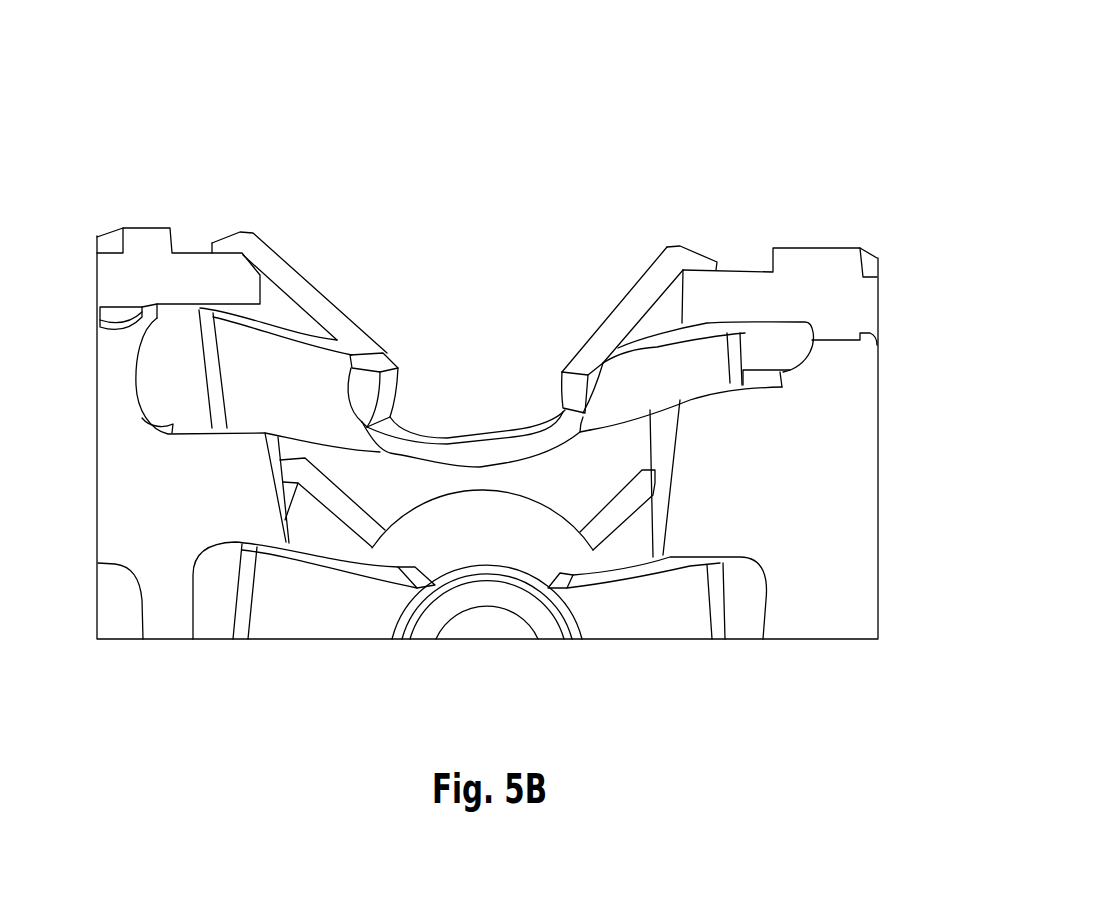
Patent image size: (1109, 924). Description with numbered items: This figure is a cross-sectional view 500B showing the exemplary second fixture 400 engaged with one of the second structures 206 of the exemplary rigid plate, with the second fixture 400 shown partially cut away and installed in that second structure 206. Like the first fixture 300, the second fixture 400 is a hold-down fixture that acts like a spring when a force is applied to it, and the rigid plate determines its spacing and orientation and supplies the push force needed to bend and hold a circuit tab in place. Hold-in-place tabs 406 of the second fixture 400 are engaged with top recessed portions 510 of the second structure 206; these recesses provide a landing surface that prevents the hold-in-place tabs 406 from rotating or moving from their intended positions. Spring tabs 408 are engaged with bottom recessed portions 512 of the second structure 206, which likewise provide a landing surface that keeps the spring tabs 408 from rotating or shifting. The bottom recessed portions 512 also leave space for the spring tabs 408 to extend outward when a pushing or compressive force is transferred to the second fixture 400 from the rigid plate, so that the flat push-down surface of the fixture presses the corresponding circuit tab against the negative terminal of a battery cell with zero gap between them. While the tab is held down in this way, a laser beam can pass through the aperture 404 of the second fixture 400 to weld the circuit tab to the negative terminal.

The cross-sectional view 500B is at (845, 92).
The second fixture 400 is at (674, 170).
The aperture 404 is at (477, 410).
The hold-in-place tabs 406 is at (217, 240).
The spring tabs 408 is at (232, 396).
The second structure 206 is at (770, 295).
The top recessed portions 510 is at (197, 252).
The bottom recessed portions 512 is at (180, 323).
The first fixture 300 is at (485, 545).